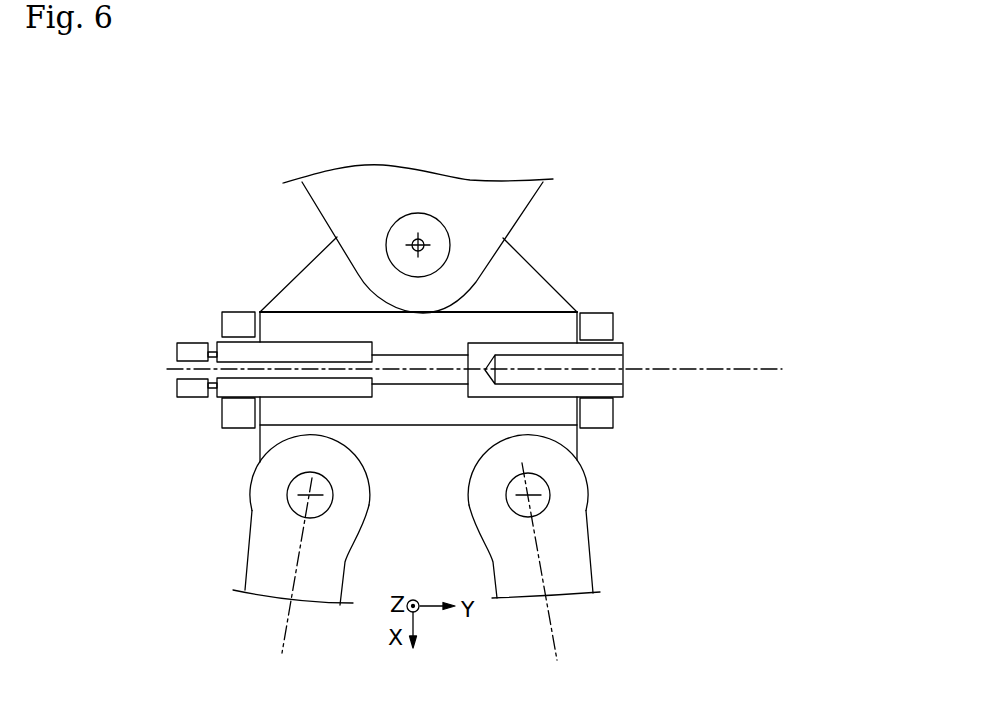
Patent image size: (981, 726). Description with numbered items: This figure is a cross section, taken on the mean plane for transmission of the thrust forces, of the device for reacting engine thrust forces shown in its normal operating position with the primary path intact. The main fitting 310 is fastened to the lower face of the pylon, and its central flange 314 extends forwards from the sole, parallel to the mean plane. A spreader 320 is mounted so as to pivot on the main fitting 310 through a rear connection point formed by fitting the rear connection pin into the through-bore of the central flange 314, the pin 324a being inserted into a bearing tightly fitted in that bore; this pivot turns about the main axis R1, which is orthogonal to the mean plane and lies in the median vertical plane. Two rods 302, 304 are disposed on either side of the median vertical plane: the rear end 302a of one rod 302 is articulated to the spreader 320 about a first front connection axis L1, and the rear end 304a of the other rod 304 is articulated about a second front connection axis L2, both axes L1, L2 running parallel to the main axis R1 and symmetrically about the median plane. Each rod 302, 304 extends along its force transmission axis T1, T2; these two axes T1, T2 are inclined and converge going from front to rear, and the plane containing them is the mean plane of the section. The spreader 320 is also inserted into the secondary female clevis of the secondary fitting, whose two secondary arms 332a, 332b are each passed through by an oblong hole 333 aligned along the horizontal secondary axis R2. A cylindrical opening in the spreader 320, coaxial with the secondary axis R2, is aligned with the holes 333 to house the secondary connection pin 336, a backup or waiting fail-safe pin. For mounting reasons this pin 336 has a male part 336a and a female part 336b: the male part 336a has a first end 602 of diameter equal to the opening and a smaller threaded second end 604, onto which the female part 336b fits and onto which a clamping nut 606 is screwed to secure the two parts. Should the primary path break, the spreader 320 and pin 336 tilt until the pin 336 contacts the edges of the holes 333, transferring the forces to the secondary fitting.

The main fitting 310 is at (624, 147).
The central flange 314 is at (508, 192).
The pin 324a is at (420, 223).
The main axis R1 is at (413, 244).
The spreader 320 is at (441, 489).
The secondary arm 332a is at (607, 321).
The secondary arm 332b is at (164, 334).
The hole 333 is at (240, 335).
The secondary connection pin 336 is at (750, 433).
The male part 336a is at (615, 392).
The female part 336b is at (236, 387).
The first end 602 is at (613, 388).
The second end 604 is at (187, 373).
The clamping nut 606 is at (187, 353).
The secondary axis R2 is at (475, 387).
The rod 302 is at (273, 562).
The rear end 302a is at (154, 548).
The rod 304 is at (572, 570).
The rear end 304a is at (671, 556).
The first front connection axis L1 is at (292, 492).
The second front connection axis L2 is at (553, 493).
The force transmission axis T1 is at (288, 617).
The force transmission axis T2 is at (553, 627).